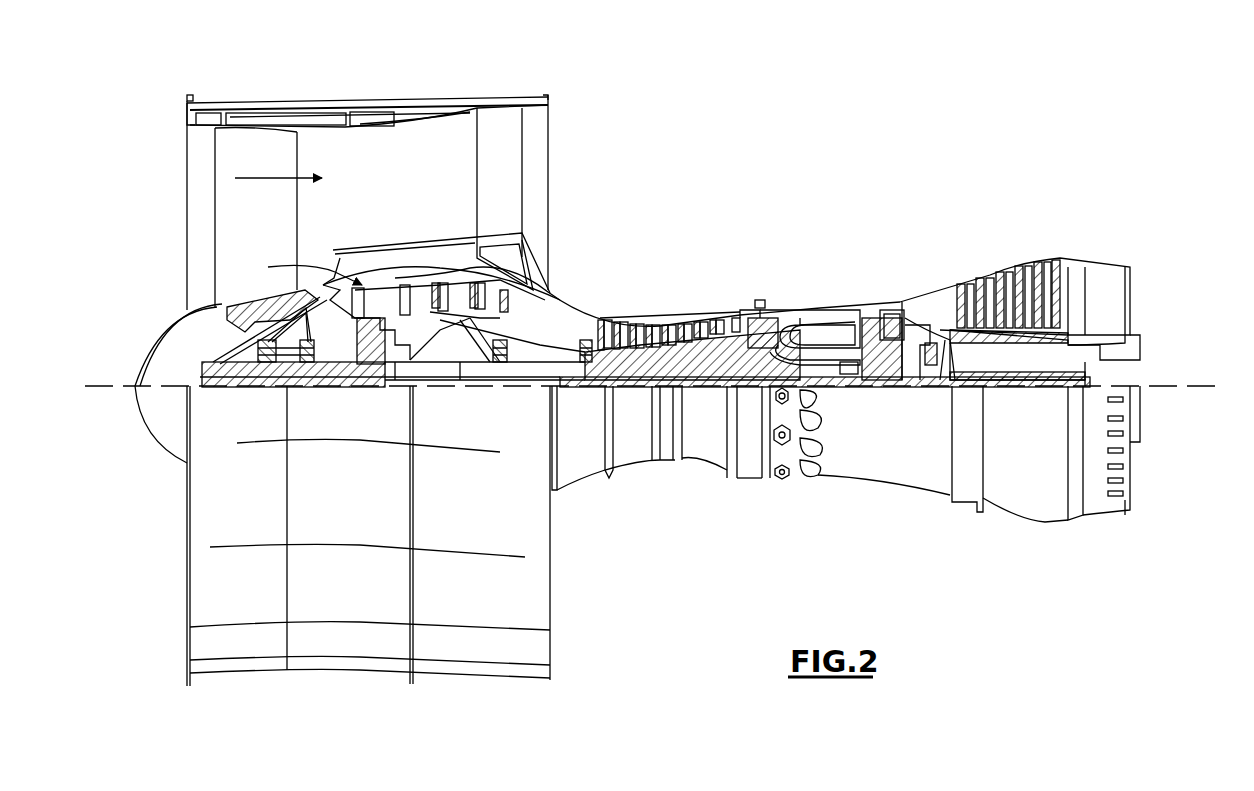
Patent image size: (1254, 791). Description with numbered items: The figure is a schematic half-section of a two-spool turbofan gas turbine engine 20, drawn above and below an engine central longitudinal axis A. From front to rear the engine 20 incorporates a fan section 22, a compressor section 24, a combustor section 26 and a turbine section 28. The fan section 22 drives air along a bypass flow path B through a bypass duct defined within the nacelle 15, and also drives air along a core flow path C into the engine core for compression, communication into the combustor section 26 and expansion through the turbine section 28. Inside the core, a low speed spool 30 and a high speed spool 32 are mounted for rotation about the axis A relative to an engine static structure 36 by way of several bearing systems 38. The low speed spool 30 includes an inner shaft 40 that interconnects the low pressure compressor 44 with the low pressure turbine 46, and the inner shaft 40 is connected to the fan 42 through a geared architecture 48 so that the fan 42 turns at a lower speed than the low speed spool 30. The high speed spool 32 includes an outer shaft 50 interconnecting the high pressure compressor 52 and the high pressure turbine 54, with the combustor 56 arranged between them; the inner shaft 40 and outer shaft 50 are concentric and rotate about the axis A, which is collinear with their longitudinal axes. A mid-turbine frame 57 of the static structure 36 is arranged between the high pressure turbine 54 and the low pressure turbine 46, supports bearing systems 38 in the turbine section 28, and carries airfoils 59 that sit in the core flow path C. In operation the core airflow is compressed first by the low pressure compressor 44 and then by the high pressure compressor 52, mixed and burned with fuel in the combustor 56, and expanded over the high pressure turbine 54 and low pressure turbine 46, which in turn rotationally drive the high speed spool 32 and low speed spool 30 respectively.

The nacelle 15 is at (370, 108).
The gas turbine engine 20 is at (828, 152).
The fan section 22 is at (298, 92).
The compressor section 24 is at (600, 296).
The combustor section 26 is at (822, 280).
The turbine section 28 is at (972, 248).
The low speed spool 30 is at (708, 395).
The high speed spool 32 is at (752, 345).
The engine static structure 36 is at (750, 480).
The bearing systems 38 is at (500, 370).
The inner shaft 40 is at (568, 395).
The fan 42 is at (268, 229).
The low pressure compressor 44 is at (470, 290).
The low pressure turbine 46 is at (1010, 290).
The geared architecture 48 is at (372, 362).
The outer shaft 50 is at (835, 392).
The high pressure compressor 52 is at (672, 358).
The high pressure turbine 54 is at (890, 320).
The combustor 56 is at (830, 332).
The mid-turbine frame 57 is at (938, 320).
The airfoils 59 is at (965, 356).
The engine central longitudinal axis A is at (1218, 386).
The bypass flow path B is at (270, 178).
The core flow path C is at (306, 270).